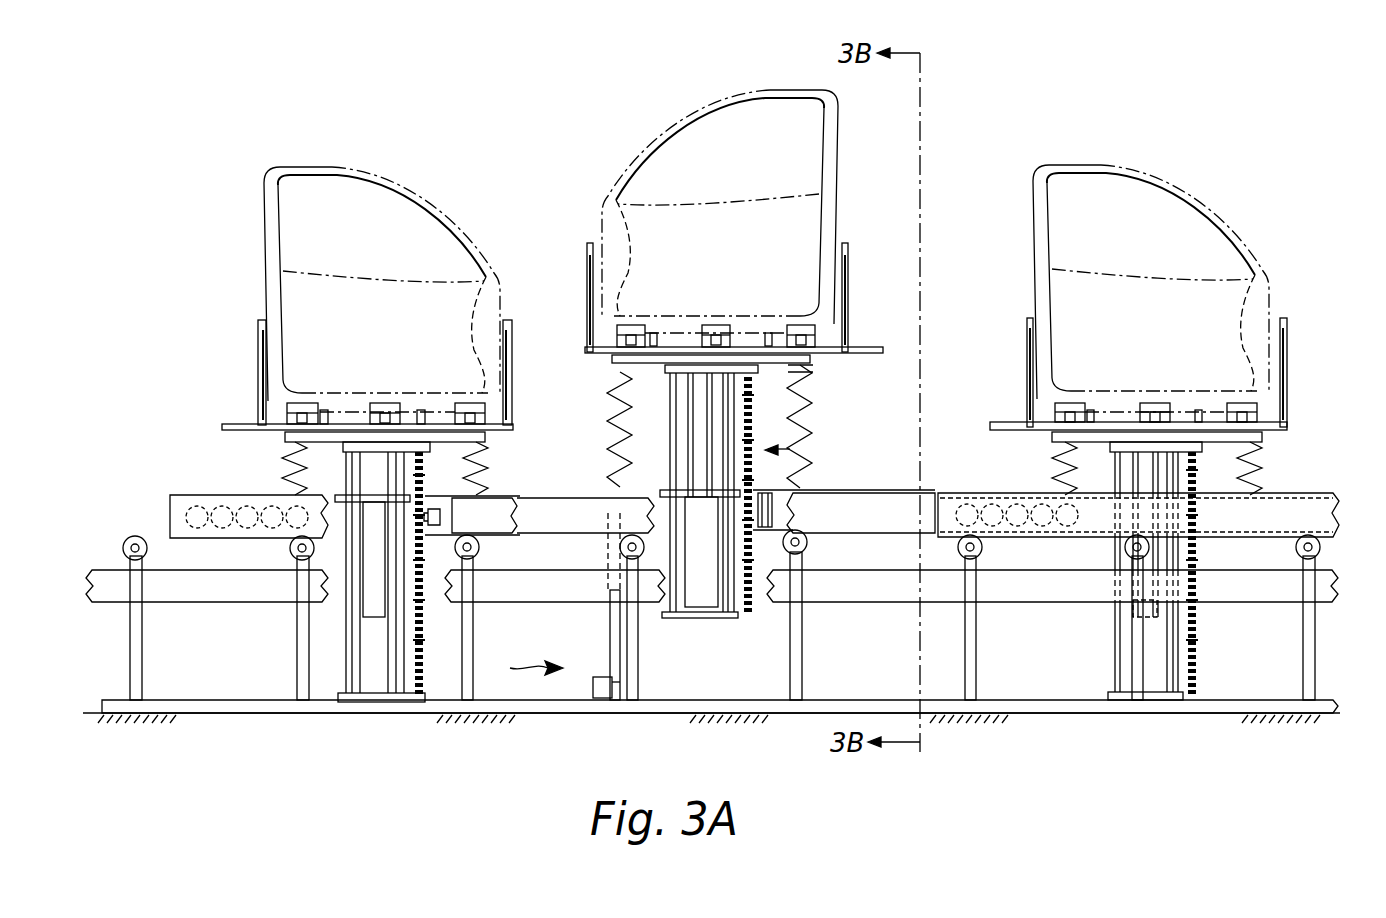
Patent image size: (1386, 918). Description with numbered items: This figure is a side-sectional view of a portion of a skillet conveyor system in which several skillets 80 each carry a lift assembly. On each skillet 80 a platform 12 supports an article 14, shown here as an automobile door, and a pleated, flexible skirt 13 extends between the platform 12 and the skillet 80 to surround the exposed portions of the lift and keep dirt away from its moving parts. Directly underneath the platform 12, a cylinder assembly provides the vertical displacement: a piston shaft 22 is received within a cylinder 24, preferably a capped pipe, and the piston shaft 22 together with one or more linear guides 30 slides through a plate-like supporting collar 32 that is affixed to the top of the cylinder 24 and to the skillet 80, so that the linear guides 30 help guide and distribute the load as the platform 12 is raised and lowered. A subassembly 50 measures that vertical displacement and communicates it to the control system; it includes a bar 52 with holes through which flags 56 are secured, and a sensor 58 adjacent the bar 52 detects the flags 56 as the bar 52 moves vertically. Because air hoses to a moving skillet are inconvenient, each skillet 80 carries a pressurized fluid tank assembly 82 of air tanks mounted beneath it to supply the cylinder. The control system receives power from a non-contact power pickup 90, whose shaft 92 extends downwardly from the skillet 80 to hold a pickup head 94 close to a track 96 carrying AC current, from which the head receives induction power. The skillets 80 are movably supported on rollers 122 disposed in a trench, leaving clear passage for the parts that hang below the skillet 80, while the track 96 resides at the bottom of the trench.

The platform 12 is at (283, 432).
The pleated flexible skirt 13 is at (482, 470).
The article 14 is at (357, 168).
The piston shaft 22 is at (700, 433).
The cylinder 24 is at (703, 585).
The linear guide 30 is at (672, 395).
The supporting collar 32 is at (338, 492).
The subassembly 50 is at (790, 449).
The bar 52 is at (752, 580).
The flags 56 is at (790, 412).
The sensor 58 is at (443, 520).
The skillet 80 is at (552, 494).
The pressurized fluid tank assembly 82 is at (195, 512).
The non-contact power pickup 90 is at (521, 669).
The shaft 92 is at (611, 627).
The pickup head 94 is at (593, 680).
The track 96 is at (253, 705).
The rollers 122 is at (133, 543).